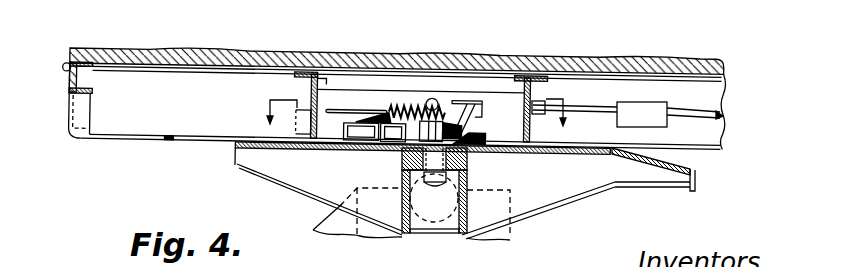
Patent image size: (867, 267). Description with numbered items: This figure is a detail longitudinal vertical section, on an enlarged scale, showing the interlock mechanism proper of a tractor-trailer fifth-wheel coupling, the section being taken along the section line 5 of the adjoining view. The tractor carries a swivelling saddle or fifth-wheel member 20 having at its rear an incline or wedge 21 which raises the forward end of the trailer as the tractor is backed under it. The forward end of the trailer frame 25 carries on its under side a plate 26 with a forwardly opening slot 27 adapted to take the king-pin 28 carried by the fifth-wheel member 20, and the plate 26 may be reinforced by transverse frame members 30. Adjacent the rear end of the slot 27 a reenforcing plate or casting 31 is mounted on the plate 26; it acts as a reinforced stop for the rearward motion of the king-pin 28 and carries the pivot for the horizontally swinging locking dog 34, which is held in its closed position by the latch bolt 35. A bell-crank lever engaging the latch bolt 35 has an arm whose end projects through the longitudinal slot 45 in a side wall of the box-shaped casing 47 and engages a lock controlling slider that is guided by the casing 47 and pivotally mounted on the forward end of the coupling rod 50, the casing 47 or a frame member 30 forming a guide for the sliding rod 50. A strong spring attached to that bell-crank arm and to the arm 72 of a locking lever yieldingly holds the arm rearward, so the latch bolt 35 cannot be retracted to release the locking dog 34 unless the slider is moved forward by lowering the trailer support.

The section line 5 is at (412, 120).
The fifth-wheel member 20 is at (336, 160).
The incline or wedge 21 is at (670, 166).
The trailer frame 25 is at (133, 123).
The plate 26 is at (503, 151).
The slot 27 is at (168, 141).
The king-pin 28 is at (465, 151).
The transverse frame members 30 is at (323, 78).
The reenforcing plate or casting 31 is at (478, 138).
The locking dog 34 is at (400, 143).
The latch bolt 35 is at (383, 141).
The longitudinal slot 45 is at (366, 110).
The box-shaped casing 47 is at (381, 89).
The coupling rod 50 is at (588, 109).
The arm of locking lever 72 is at (484, 108).